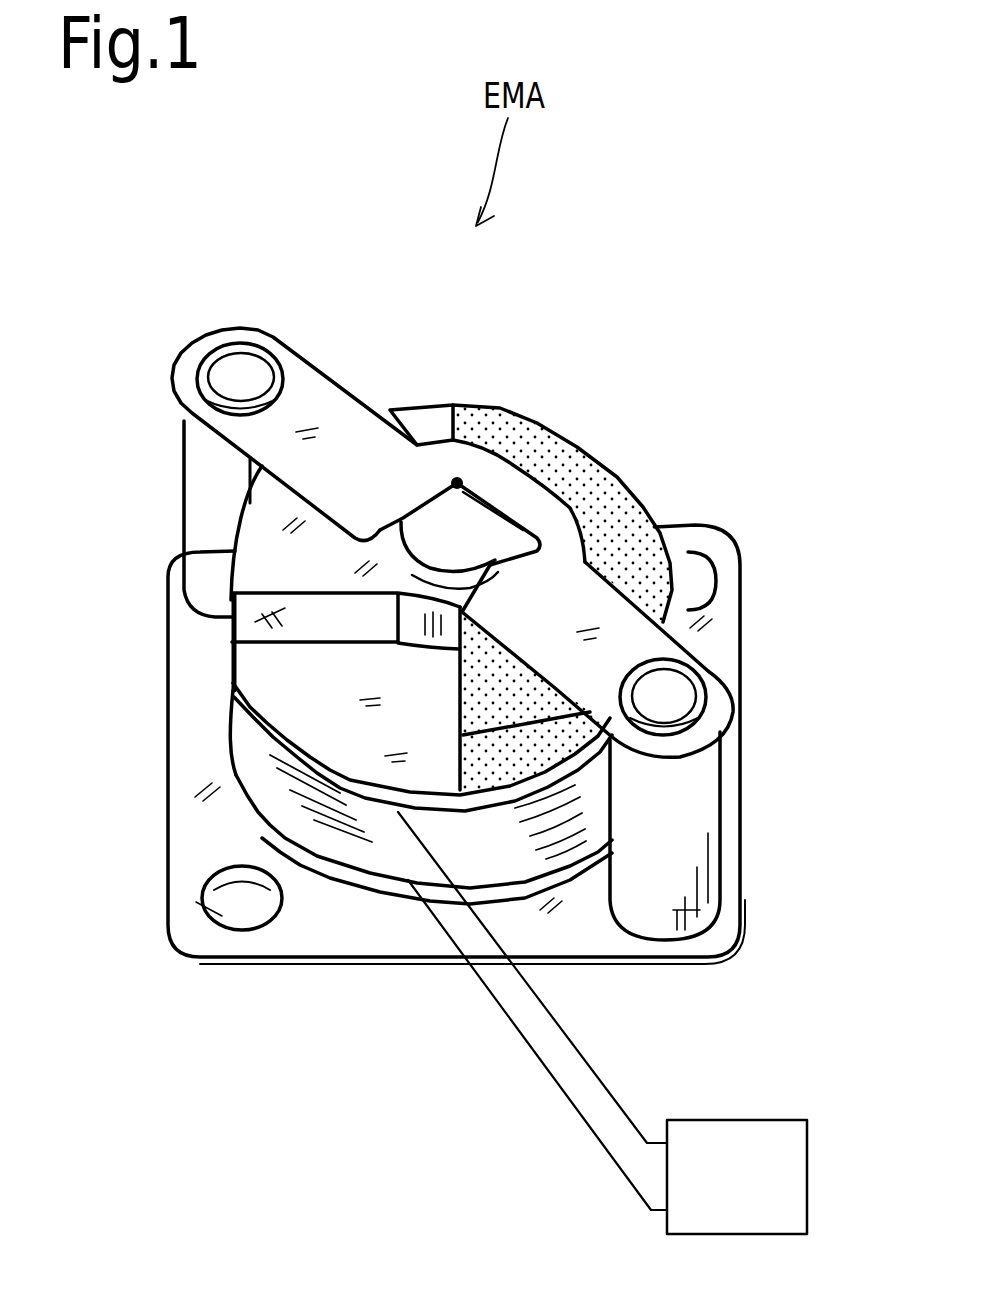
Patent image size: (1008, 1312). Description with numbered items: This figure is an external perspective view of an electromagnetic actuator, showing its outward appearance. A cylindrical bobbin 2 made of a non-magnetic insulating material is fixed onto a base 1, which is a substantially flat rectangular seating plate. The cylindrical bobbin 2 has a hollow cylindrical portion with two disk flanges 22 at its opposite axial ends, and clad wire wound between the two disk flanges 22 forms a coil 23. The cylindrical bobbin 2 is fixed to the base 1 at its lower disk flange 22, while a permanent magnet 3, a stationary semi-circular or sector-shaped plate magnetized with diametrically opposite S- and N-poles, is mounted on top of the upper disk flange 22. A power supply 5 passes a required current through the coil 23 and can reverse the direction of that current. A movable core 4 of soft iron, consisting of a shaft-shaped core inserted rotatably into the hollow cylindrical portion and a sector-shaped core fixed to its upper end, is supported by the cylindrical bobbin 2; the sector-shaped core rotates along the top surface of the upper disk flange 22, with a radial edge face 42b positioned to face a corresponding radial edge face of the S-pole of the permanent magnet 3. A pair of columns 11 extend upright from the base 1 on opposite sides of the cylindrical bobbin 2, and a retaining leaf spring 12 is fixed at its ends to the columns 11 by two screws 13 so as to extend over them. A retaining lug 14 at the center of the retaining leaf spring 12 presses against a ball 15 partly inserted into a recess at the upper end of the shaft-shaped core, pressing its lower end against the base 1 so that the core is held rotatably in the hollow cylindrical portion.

The base (seating plate) 1 is at (203, 933).
The cylindrical bobbin 2 is at (232, 676).
The permanent magnet 3 is at (636, 582).
The movable core 4 is at (268, 557).
The power supply 5 is at (807, 1170).
The columns 11 is at (212, 500).
The retaining leaf spring 12 is at (518, 498).
The screws 13 is at (231, 372).
The retaining lug 14 is at (433, 523).
The ball 15 is at (512, 582).
The disk flanges 22 is at (257, 822).
The coil 23 is at (583, 820).
The radial edge face 42b is at (265, 636).